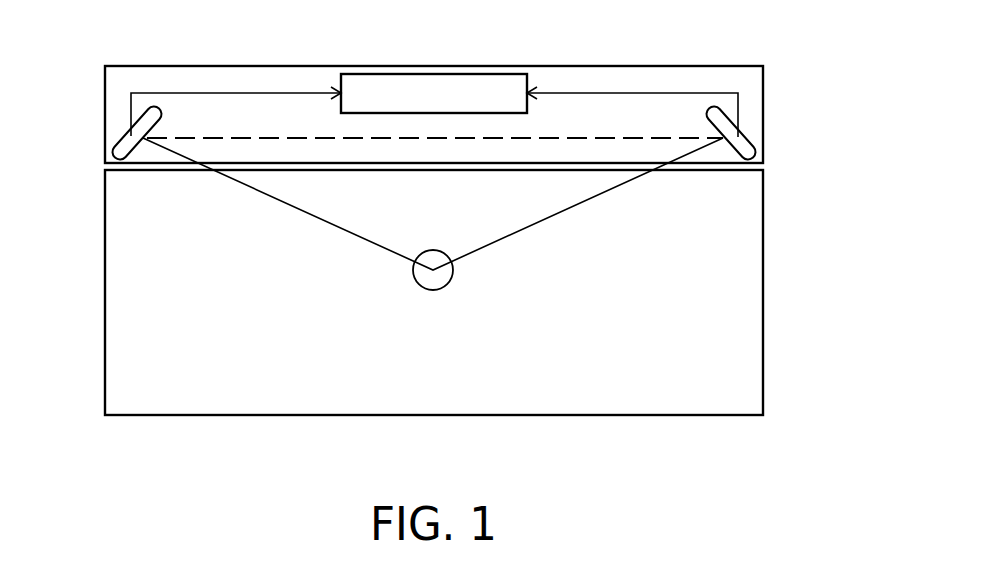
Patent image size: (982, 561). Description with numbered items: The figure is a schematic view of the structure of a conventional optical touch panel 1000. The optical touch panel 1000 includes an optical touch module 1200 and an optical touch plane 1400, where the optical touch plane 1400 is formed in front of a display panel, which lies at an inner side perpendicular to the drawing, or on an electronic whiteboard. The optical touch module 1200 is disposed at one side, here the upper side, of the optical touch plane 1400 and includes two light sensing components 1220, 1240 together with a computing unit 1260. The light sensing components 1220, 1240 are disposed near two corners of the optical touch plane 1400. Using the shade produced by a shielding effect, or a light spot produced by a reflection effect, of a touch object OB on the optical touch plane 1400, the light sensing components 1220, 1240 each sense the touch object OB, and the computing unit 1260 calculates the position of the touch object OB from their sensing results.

The optical touch panel 1000 is at (795, 510).
The optical touch module 1200 is at (720, 66).
The light sensing component 1220 is at (756, 152).
The light sensing component 1240 is at (114, 152).
The computing unit 1260 is at (513, 74).
The optical touch plane 1400 is at (722, 415).
The touch object OB is at (454, 268).